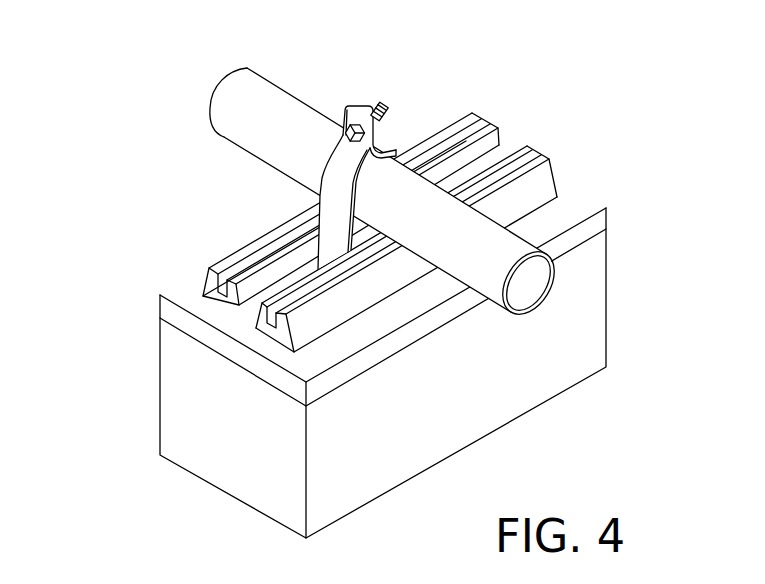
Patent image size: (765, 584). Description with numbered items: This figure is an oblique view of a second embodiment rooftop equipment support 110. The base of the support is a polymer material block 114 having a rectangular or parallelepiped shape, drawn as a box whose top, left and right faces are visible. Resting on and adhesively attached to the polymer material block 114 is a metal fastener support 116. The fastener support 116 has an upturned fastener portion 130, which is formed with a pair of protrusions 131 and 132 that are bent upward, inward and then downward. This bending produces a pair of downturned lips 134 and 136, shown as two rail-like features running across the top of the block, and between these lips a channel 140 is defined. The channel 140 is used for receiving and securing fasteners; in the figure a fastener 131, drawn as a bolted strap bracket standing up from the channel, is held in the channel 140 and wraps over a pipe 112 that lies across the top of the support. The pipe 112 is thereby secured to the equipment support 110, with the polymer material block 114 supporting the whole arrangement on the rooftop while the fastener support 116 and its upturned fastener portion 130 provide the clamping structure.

The equipment support 110 is at (137, 300).
The pipe 112 is at (268, 105).
The polymer material block 114 is at (145, 393).
The fastener support 116 is at (193, 265).
The upturned fastener portion 130 is at (433, 102).
The protrusion 131 is at (378, 97).
The protrusion 132 is at (542, 156).
The downturned lip 134 is at (498, 133).
The downturned lip 136 is at (262, 317).
The channel 140 is at (244, 309).